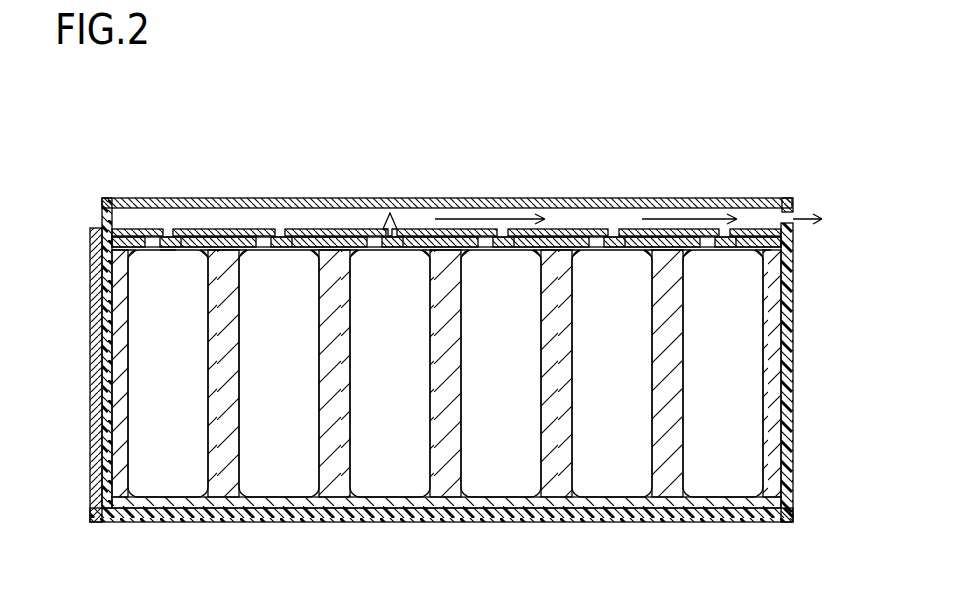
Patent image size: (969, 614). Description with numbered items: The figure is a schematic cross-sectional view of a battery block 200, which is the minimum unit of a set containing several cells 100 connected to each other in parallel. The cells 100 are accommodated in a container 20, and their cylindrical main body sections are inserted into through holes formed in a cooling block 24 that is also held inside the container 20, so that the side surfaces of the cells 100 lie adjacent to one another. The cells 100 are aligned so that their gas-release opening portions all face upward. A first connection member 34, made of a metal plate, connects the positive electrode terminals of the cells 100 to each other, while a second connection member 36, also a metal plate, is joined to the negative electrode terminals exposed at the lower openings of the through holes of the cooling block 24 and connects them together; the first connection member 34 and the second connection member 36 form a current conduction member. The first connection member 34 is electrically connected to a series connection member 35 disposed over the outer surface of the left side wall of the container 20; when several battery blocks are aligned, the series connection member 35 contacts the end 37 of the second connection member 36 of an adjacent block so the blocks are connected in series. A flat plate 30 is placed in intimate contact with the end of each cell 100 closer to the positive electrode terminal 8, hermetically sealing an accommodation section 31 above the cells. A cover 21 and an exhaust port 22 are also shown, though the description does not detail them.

The battery block 200 is at (782, 132).
The positive electrode terminal 8 is at (168, 233).
The flat plate 30 is at (227, 236).
The cover 21 is at (298, 203).
The first connection member 34 is at (353, 230).
The accommodation section 31 is at (555, 244).
The exhaust port 22 is at (795, 212).
The series connection member 35 is at (93, 338).
The container 20 is at (451, 408).
The cell 100 is at (740, 408).
The end of second connection member 37 is at (802, 511).
The cooling block 24 is at (230, 447).
The second connection member 36 is at (445, 503).